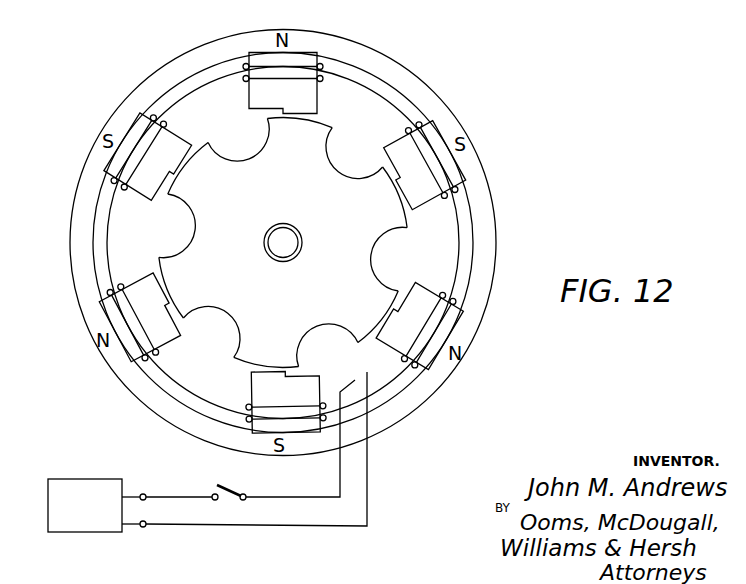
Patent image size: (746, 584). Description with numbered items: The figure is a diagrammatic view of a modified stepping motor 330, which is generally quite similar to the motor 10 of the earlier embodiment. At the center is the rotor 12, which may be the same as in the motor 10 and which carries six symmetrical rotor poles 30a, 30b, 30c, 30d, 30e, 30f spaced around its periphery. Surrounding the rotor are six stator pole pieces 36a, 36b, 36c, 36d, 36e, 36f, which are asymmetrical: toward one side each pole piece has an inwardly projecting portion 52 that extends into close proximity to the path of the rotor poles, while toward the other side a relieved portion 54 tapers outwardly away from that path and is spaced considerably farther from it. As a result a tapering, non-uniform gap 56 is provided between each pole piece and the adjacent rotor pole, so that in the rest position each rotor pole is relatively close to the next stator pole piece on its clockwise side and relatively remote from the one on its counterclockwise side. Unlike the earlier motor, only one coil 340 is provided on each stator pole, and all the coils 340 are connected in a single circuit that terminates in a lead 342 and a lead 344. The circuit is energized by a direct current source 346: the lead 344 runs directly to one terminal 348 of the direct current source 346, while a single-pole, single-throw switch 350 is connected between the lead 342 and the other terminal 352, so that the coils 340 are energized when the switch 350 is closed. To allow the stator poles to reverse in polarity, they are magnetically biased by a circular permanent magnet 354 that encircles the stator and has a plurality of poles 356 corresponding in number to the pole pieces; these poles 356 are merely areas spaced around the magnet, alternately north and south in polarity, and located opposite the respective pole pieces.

The motor 10 is at (301, 229).
The rotor 12 is at (297, 197).
The rotor pole 30a is at (335, 143).
The rotor pole 30b is at (403, 233).
The rotor pole 30c is at (357, 338).
The rotor pole 30d is at (233, 348).
The rotor pole 30e is at (172, 256).
The rotor pole 30f is at (219, 148).
The stator pole piece 36a is at (283, 83).
The stator pole piece 36b is at (402, 162).
The stator pole piece 36c is at (392, 345).
The stator pole piece 36d is at (251, 388).
The stator pole piece 36e is at (150, 378).
The stator pole piece 36f is at (177, 137).
The inwardly projecting portion 52 is at (192, 146).
The relieved portion 54 is at (247, 110).
The non-uniform gap 56 is at (270, 116).
The modified stepping motor 330 is at (453, 72).
The coil 340 is at (322, 60).
The lead 342 is at (293, 501).
The lead 344 is at (297, 528).
The direct current source 346 is at (80, 532).
The terminal 348 is at (145, 528).
The single-pole, single-throw switch 350 is at (230, 485).
The terminal 352 is at (145, 492).
The permanent magnet 354 is at (489, 228).
The poles 356 is at (288, 28).